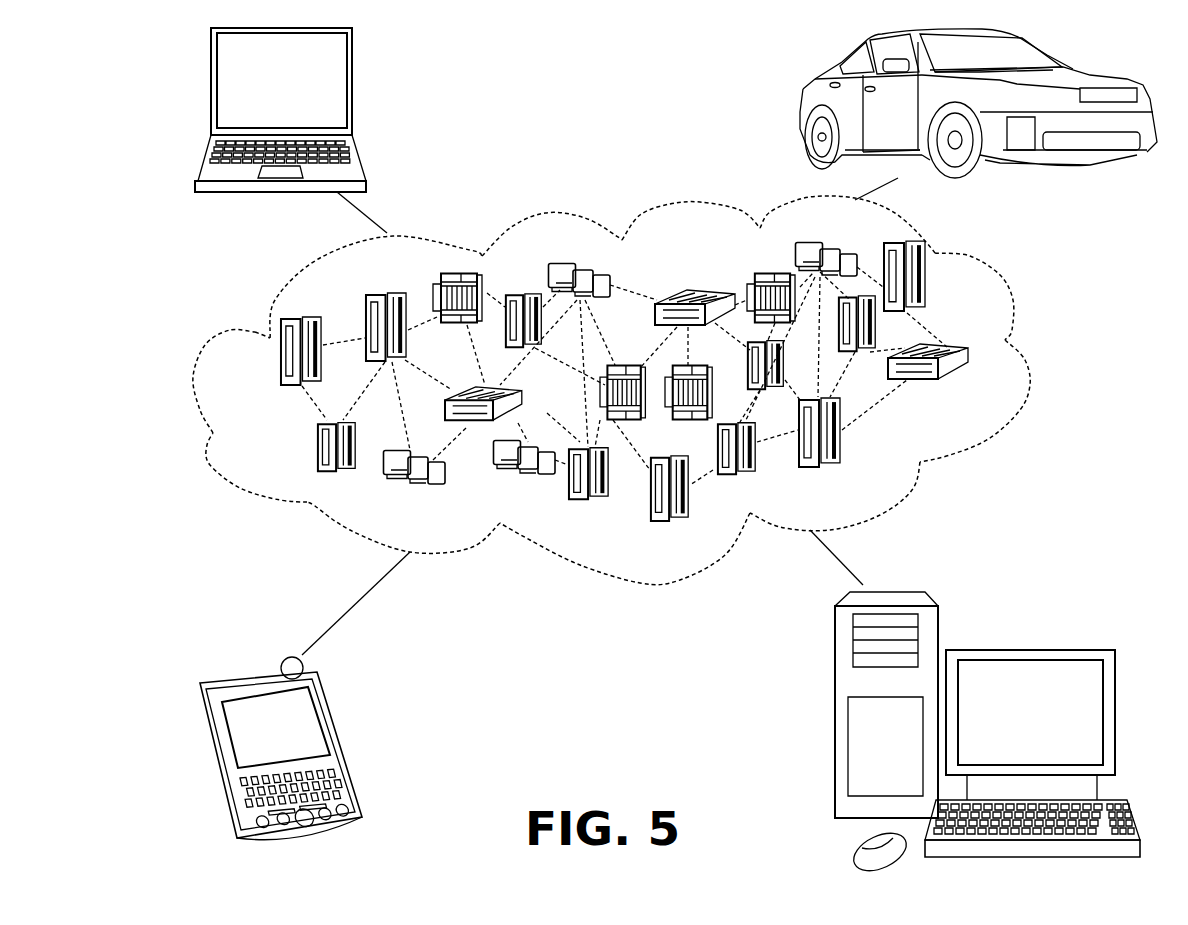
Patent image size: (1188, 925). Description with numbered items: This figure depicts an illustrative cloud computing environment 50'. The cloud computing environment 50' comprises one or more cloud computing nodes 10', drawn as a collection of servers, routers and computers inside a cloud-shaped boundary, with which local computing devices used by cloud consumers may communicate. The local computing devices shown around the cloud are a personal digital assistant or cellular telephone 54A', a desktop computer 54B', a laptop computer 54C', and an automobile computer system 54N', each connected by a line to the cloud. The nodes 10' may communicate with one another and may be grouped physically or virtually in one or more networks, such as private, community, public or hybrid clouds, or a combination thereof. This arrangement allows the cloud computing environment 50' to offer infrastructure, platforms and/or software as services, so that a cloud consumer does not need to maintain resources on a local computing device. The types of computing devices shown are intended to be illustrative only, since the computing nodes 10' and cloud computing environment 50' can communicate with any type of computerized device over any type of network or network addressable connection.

The cloud computing environment 50' is at (638, 390).
The cloud computing node 10' is at (979, 389).
The personal digital assistant or cellular telephone 54A' is at (306, 696).
The desktop computer 54B' is at (975, 704).
The laptop computer 54C' is at (308, 130).
The automobile computer system 54N' is at (940, 114).